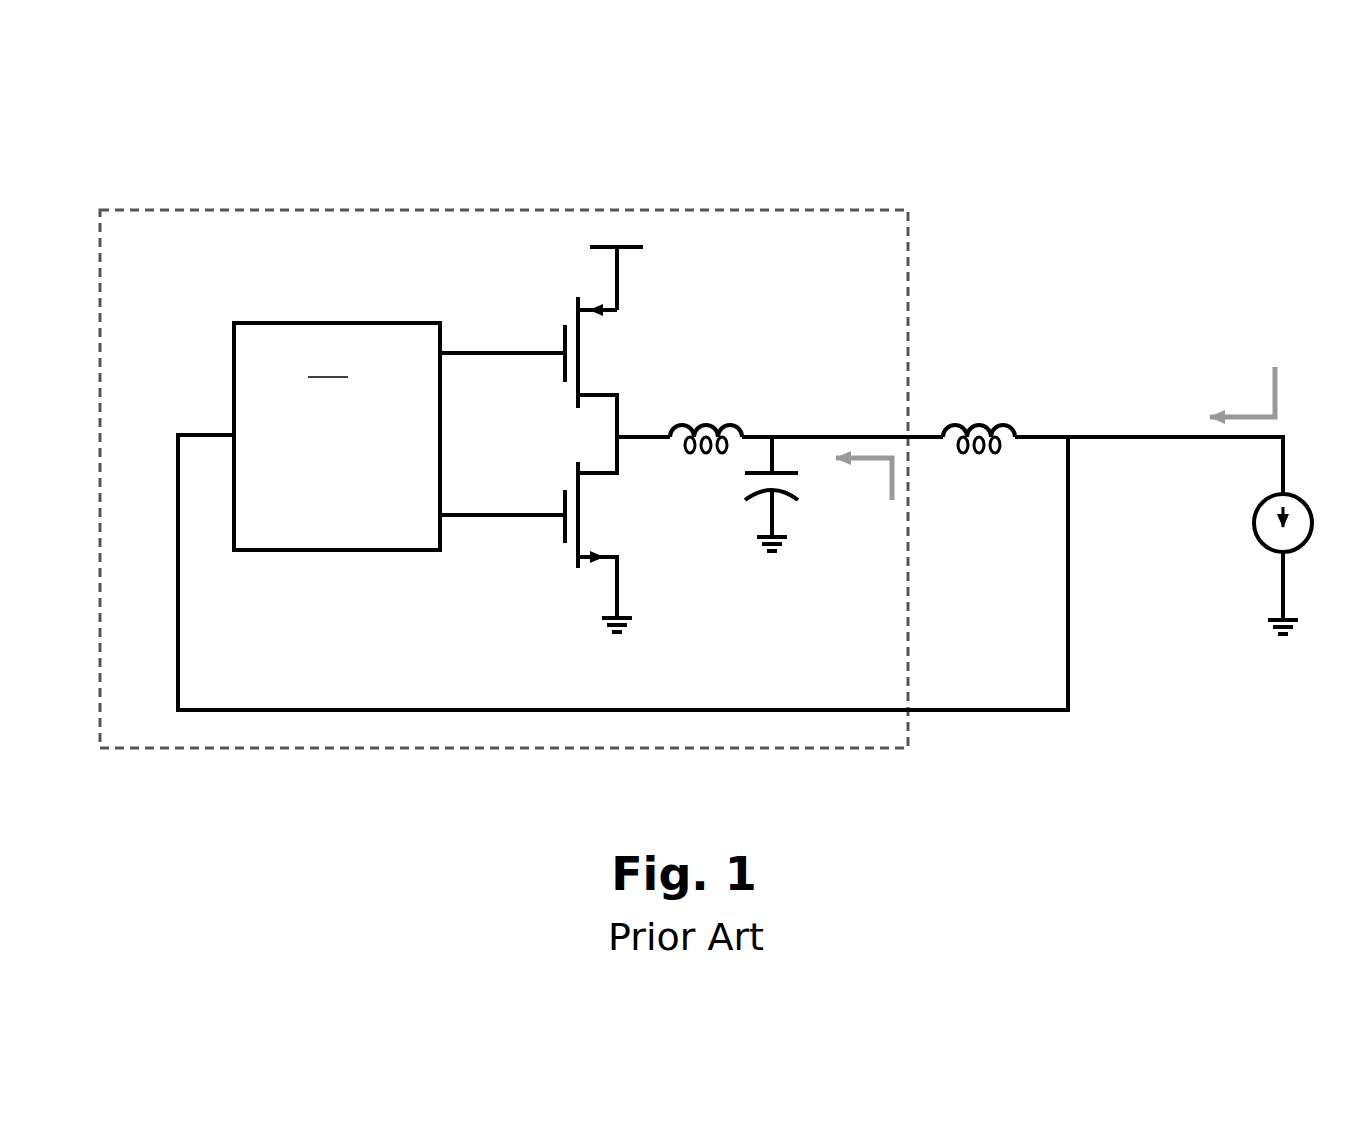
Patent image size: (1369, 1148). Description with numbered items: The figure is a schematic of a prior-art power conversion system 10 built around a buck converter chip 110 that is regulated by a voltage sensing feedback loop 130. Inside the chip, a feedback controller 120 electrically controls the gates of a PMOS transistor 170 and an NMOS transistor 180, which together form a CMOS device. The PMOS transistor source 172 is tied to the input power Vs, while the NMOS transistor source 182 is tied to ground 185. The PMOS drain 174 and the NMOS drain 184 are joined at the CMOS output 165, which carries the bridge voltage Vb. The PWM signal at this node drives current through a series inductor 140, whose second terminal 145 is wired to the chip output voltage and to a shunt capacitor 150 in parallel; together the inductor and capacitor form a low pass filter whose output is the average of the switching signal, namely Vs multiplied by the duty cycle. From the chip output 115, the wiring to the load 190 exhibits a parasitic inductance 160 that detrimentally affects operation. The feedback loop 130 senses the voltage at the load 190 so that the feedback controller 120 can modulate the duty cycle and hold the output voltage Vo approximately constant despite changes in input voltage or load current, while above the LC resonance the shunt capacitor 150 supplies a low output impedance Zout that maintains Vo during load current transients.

The power conversion system 10 is at (183, 84).
The buck converter chip 110 is at (228, 200).
The output 115 is at (922, 408).
The feedback controller 120 is at (399, 436).
The voltage sensing feedback loop 130 is at (1005, 728).
The series inductor 140 is at (728, 402).
The second terminal 145 is at (758, 410).
The shunt capacitor 150 is at (735, 530).
The parasitic inductance 160 is at (985, 397).
The CMOS output 165 is at (636, 414).
The PMOS transistor 170 is at (538, 316).
The source 172 is at (563, 284).
The drain 174 is at (590, 374).
The NMOS transistor 180 is at (538, 538).
The source 182 is at (573, 575).
The drain 184 is at (561, 460).
The ground 185 is at (583, 640).
The load 190 is at (1225, 522).